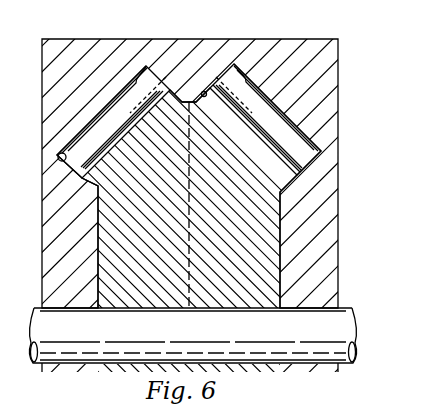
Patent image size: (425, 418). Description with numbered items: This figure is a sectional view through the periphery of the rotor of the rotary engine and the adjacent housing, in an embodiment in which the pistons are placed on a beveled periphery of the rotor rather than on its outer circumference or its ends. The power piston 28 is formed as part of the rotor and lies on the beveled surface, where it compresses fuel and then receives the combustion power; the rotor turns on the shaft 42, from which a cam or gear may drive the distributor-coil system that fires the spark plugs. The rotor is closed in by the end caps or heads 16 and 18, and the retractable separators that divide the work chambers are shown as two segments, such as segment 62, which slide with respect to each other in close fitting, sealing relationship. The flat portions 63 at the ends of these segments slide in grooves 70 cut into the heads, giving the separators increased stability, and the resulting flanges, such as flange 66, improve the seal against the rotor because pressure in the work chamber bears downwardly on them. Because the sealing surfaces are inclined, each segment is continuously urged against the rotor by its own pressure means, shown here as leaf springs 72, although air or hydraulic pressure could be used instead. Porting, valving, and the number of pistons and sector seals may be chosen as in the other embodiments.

The end cap 16 is at (338, 240).
The end cap 18 is at (42, 272).
The power piston 28 is at (130, 90).
The shaft 42 is at (157, 332).
The segment 62 is at (98, 39).
The flat portion 63 is at (160, 93).
The flange 66 is at (120, 112).
The groove 70 is at (349, 184).
The leaf spring 72 is at (105, 140).